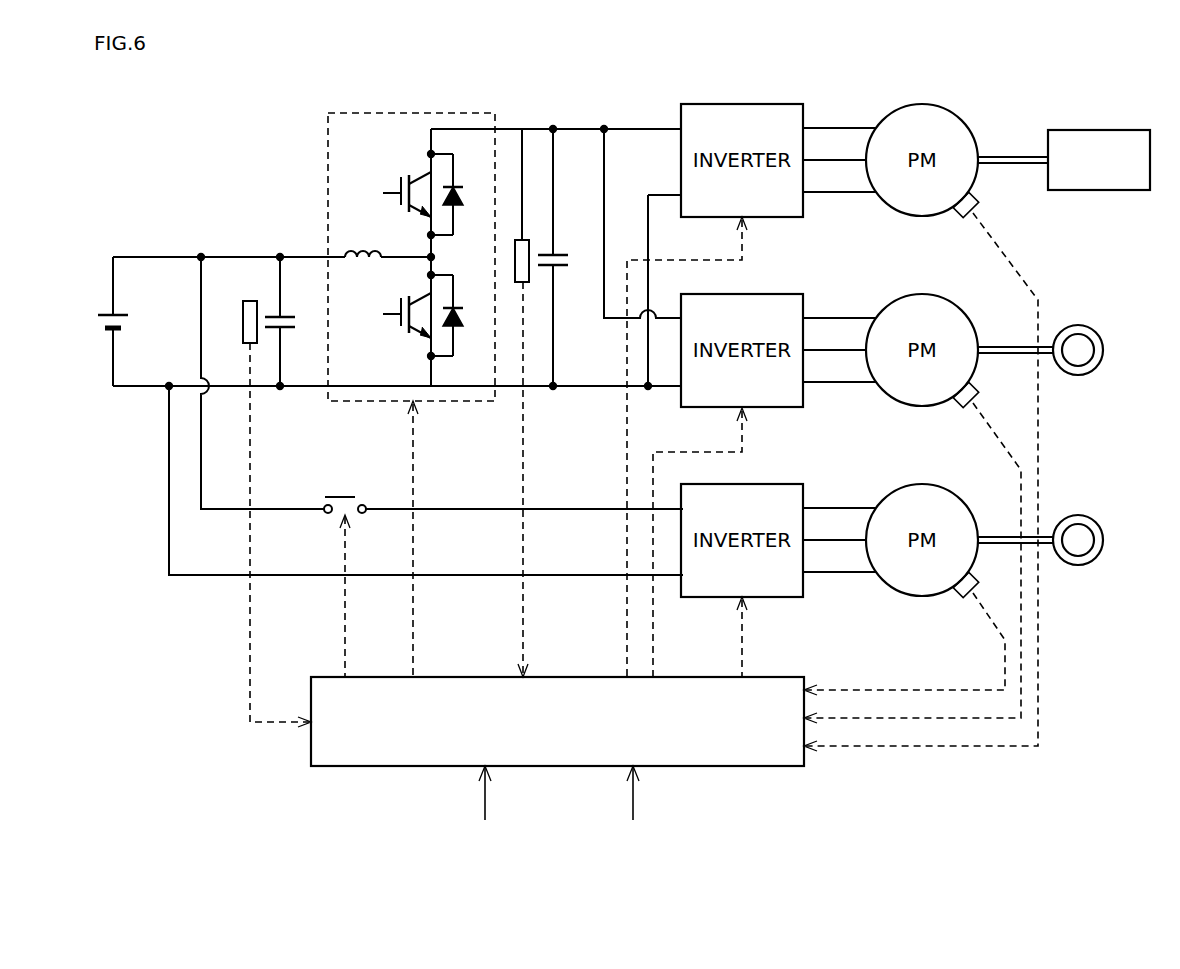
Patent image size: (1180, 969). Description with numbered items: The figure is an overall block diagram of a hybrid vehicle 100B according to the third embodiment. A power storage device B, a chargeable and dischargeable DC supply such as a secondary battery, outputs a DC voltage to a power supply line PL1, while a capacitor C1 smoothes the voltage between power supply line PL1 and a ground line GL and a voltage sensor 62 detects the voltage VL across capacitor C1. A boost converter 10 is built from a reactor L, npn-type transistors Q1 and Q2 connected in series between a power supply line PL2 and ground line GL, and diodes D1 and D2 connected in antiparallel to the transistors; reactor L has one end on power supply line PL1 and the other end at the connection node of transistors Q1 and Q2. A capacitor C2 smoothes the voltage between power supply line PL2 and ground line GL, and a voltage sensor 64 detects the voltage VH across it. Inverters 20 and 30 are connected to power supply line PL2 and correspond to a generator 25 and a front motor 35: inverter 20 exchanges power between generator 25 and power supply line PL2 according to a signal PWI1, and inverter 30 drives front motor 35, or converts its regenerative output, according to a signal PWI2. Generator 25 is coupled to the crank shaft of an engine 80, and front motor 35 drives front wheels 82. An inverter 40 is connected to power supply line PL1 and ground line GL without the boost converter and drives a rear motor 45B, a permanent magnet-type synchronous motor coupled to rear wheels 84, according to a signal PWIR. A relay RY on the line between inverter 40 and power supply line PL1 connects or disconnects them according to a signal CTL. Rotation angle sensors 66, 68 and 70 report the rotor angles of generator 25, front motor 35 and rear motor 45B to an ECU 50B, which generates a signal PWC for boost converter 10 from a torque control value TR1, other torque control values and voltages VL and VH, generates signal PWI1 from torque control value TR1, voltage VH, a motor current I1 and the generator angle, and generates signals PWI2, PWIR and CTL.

The hybrid vehicle 100B is at (147, 95).
The boost converter 10 is at (411, 243).
The power storage device B is at (98, 316).
The power supply line PL1 is at (243, 255).
The power supply line PL2 is at (528, 127).
The ground line GL is at (305, 389).
The voltage sensor 62 is at (248, 300).
The voltage sensor 64 is at (522, 239).
The capacitor C1 is at (296, 317).
The capacitor C2 is at (565, 256).
The reactor L is at (365, 255).
The npn-type transistor Q1 is at (398, 190).
The npn-type transistor Q2 is at (399, 340).
The diode D1 is at (462, 188).
The diode D2 is at (463, 309).
The relay RY is at (354, 496).
The signal CTL is at (321, 596).
The signal PWC is at (438, 539).
The inverter 20 is at (769, 104).
The inverter 30 is at (769, 294).
The inverter 40 is at (769, 484).
The signal PWI1 is at (714, 447).
The signal PWI2 is at (727, 542).
The signal PWIR is at (770, 637).
The generator 25 is at (916, 104).
The front motor 35 is at (897, 294).
The rear motor 45B is at (901, 486).
The engine 80 is at (1125, 129).
The front wheels 82 is at (1104, 350).
The rear wheels 84 is at (1104, 540).
The rotation angle sensor 66 is at (954, 224).
The rotation angle sensor 68 is at (954, 414).
The rotation angle sensor 70 is at (953, 604).
The ECU 50B is at (465, 676).
The voltage VL is at (280, 535).
The voltage VH is at (539, 479).
The torque control value TR1 is at (484, 807).
The motor current I1 is at (632, 807).